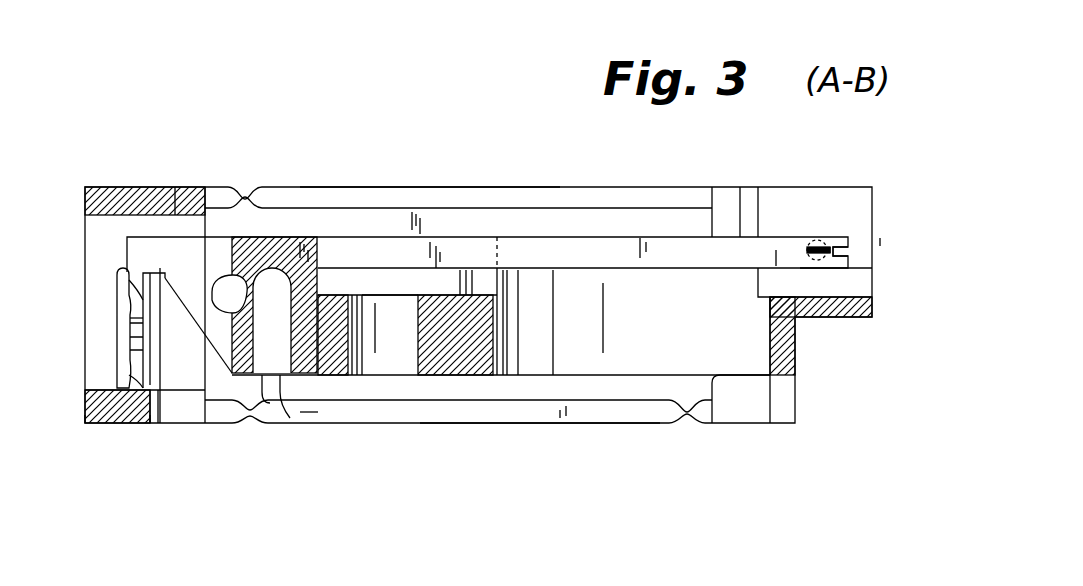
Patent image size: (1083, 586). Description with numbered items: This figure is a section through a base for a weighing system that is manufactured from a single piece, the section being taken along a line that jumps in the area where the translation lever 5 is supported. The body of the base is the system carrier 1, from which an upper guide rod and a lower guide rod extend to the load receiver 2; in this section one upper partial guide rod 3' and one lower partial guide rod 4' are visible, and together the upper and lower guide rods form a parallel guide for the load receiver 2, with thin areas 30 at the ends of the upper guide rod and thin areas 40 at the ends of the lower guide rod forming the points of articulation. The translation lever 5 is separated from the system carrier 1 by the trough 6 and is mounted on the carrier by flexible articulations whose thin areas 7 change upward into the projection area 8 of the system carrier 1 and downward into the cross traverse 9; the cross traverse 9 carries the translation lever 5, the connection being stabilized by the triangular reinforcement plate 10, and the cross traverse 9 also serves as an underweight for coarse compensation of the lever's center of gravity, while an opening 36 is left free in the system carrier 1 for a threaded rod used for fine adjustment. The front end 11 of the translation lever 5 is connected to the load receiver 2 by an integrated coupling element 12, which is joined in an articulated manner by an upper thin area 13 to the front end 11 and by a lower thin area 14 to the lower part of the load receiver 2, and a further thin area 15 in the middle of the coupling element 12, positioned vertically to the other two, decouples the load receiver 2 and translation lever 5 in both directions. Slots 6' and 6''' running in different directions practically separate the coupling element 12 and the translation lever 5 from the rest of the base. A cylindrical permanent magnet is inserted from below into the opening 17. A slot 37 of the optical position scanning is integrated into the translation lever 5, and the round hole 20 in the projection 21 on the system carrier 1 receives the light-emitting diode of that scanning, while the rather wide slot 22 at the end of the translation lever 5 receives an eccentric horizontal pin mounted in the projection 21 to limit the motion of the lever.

The system carrier 1 is at (790, 350).
The load receiver 2 is at (108, 190).
The upper partial guide rod 3' is at (430, 166).
The lower partial guide rod 4' is at (540, 449).
The translation lever 5 is at (175, 195).
The trough 6 is at (693, 215).
The slot 6' is at (100, 451).
The slot 6''' is at (315, 441).
The thin areas 7 is at (255, 288).
The projection area 8 is at (312, 207).
The cross traverse 9 is at (275, 424).
The triangular reinforcement plate 10 is at (198, 312).
The front end of translation lever 11 is at (125, 245).
The coupling element 12 is at (130, 318).
The upper thin area 13 is at (118, 292).
The lower thin area 14 is at (130, 370).
The further thin area 15 is at (130, 333).
The opening 17 is at (625, 358).
The round hole 20 is at (832, 238).
The projection 21 is at (868, 212).
The slot 22 is at (850, 252).
The thin areas 30 is at (248, 198).
The opening 36 is at (396, 355).
The slot 37 is at (808, 245).
The thin areas 40 is at (250, 418).